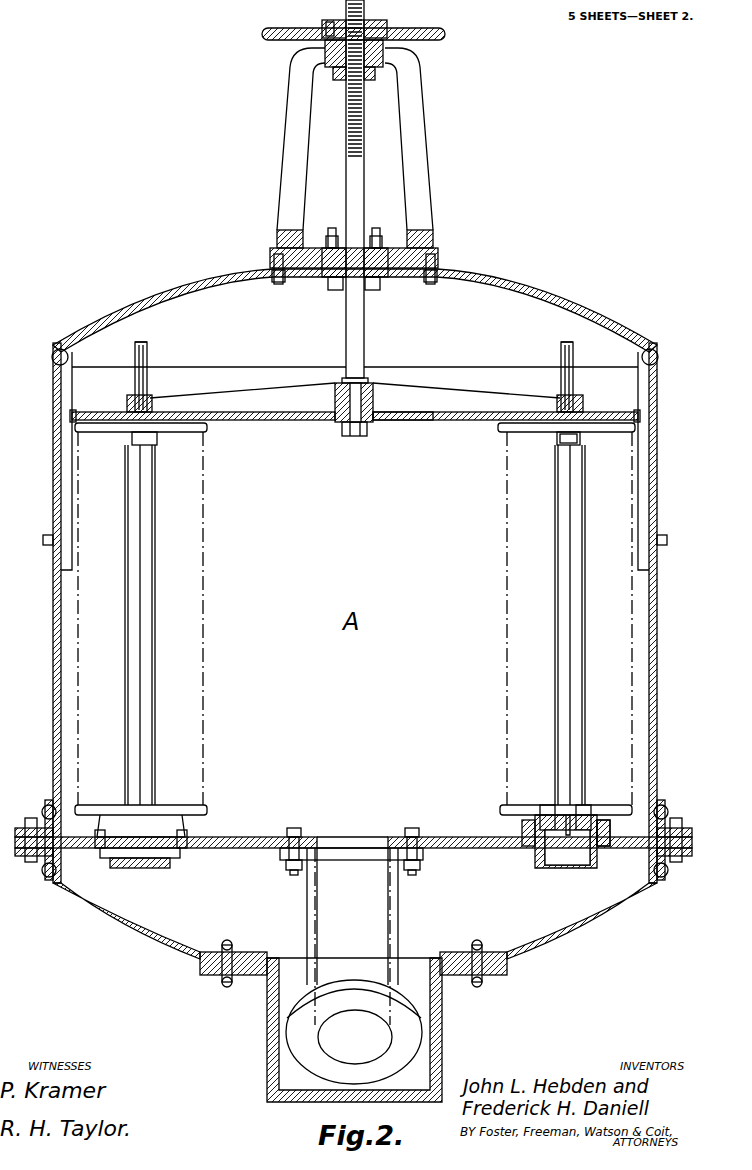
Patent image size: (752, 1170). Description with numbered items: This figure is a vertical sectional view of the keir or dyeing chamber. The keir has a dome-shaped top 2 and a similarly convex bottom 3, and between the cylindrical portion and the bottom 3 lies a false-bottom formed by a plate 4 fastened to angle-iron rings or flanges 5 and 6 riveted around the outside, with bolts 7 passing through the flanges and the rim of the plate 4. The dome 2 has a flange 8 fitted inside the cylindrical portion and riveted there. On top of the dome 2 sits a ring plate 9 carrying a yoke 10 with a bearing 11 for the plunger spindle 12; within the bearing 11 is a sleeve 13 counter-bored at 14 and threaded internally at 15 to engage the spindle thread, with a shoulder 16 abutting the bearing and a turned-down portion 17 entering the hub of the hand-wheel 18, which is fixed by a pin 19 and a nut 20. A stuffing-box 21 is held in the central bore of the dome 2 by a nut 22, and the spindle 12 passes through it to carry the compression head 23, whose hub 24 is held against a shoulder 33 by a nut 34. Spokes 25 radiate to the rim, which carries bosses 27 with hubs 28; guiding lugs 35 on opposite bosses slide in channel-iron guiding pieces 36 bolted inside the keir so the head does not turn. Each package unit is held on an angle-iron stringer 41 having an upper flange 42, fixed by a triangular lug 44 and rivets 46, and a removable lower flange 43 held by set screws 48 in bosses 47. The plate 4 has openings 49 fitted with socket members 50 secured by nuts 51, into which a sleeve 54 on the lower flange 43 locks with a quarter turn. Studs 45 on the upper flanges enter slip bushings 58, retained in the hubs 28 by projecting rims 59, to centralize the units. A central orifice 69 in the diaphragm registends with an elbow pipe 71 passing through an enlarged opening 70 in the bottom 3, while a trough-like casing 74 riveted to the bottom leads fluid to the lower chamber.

The dome-shaped top 2 is at (236, 283).
The convex bottom 3 is at (542, 932).
The diaphragm plate 4 is at (259, 849).
The angle-iron ring 5 is at (24, 830).
The angle-iron ring 6 is at (24, 856).
The bolt 7 is at (44, 872).
The flange 8 is at (68, 357).
The ring plate 9 is at (439, 257).
The yoke 10 is at (421, 118).
The bearing 11 is at (386, 58).
The plunger spindle 12 is at (360, 193).
The sleeve 13 is at (325, 56).
The counter-bore 14 is at (366, 76).
The internal thread 15 is at (366, 26).
The shoulder 16 is at (337, 76).
The turned-down portion 17 is at (386, 33).
The hand-wheel 18 is at (440, 33).
The pin 19 is at (332, 28).
The nut 20 is at (324, 30).
The stuffing-box 21 is at (328, 246).
The nut 22 is at (330, 283).
The compression head 23 is at (376, 422).
The hub 24 is at (335, 402).
The ribbed spoke 25 is at (228, 411).
The boss 27 is at (126, 411).
The hub 28 is at (152, 398).
The shoulder 33 is at (360, 379).
The nut 34 is at (341, 430).
The guiding lug 35 is at (78, 410).
The guiding piece 36 is at (72, 459).
The stringer 41 is at (150, 524).
The upper flange 42 is at (206, 431).
The lower flange 43 is at (206, 808).
The triangular lug 44 is at (152, 440).
The stud 45 is at (152, 412).
The rivet 46 is at (560, 441).
The boss 47 is at (546, 810).
The set screw 48 is at (566, 841).
The opening 49 is at (190, 840).
The socket member 50 is at (160, 818).
The nut 51 is at (180, 858).
The sleeve 54 is at (610, 830).
The slip bushing 58 is at (148, 366).
The projecting rim 59 is at (148, 344).
The orifice 69 is at (362, 837).
The opening 70 is at (402, 960).
The elbow pipe 71 is at (398, 912).
The casing 74 is at (267, 1030).